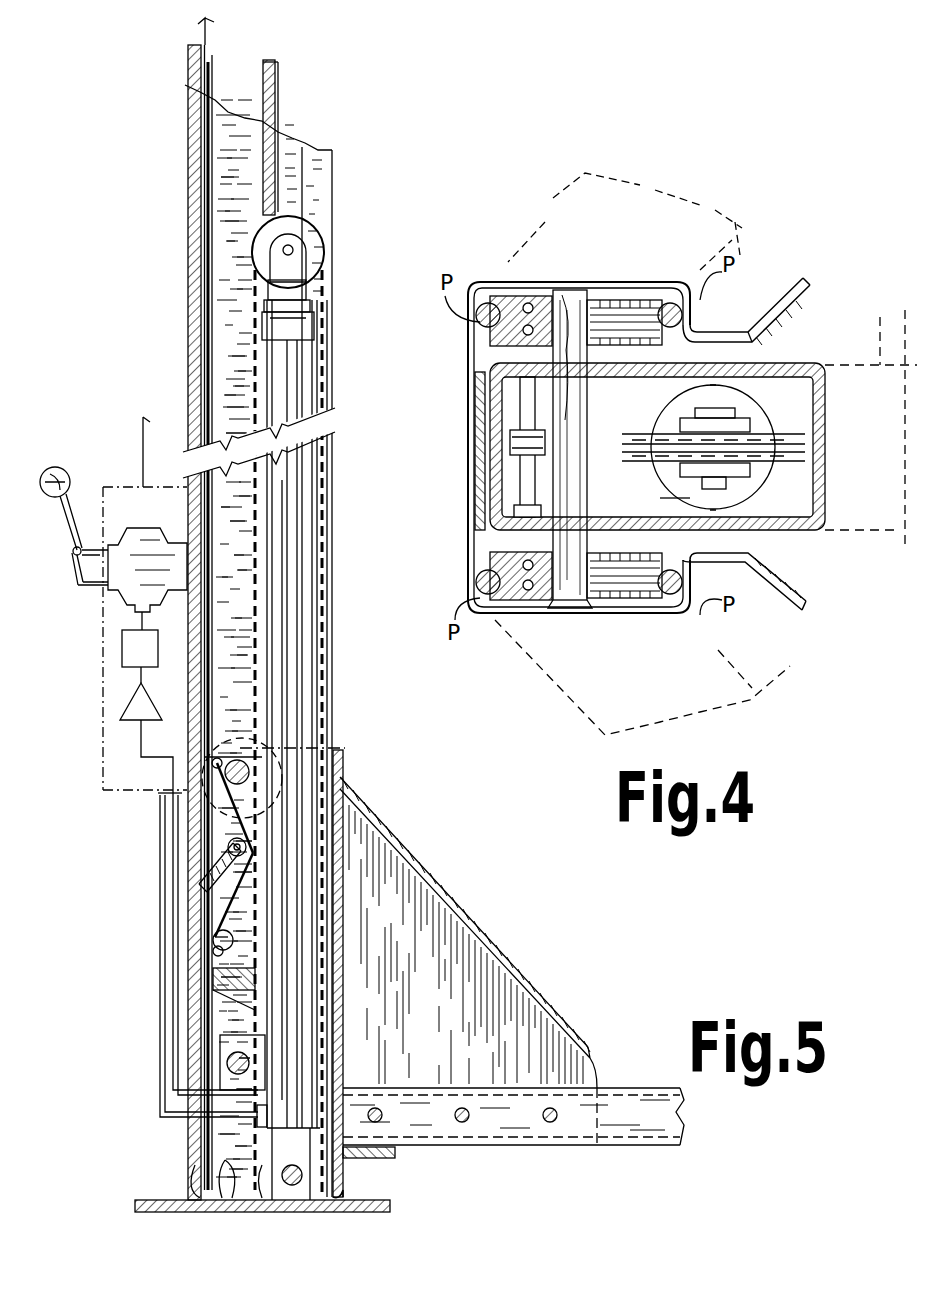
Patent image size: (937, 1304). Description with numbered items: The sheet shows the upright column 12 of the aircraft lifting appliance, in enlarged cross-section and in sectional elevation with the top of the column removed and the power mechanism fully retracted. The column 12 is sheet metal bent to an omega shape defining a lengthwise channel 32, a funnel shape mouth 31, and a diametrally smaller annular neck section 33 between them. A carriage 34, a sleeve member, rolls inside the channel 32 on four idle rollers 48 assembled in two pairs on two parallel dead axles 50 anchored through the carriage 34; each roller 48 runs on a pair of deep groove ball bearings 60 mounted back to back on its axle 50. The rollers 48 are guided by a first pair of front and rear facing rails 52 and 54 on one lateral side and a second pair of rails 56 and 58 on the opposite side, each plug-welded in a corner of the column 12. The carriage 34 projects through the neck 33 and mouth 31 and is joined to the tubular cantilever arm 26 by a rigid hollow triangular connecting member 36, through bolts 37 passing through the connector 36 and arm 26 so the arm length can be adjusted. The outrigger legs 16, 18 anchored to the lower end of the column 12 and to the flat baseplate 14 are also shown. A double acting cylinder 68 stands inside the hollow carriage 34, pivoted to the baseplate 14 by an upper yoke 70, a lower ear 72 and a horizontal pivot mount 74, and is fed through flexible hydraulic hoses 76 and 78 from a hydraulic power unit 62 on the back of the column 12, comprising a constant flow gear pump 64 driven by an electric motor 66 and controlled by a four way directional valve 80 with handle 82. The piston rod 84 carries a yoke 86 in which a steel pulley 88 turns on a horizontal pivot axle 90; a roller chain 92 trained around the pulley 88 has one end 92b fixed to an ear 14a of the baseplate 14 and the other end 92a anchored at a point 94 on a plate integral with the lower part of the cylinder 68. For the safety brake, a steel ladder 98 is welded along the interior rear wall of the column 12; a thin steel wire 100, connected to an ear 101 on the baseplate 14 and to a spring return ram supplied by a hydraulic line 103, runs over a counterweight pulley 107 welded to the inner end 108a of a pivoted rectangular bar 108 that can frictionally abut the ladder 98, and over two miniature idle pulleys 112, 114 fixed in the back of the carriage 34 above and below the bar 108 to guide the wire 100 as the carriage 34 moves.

In FIG. 4, the upright column 12 is at (760, 322).
In FIG. 5, the baseplate 14 is at (150, 1200).
In FIG. 5, the ear 14a is at (330, 1210).
In FIG. 4, the ground support outrigger leg 16 is at (553, 198).
In FIG. 4, the ground support outrigger leg 18 is at (790, 666).
In FIG. 5, the tubular arm 26 is at (625, 1098).
In FIG. 4, the funnel shape mouth 31 is at (800, 595).
In FIG. 4, the lengthwise channel 32 is at (480, 350).
In FIG. 4, the annular section 33 is at (765, 333).
In FIG. 5, the carriage 34 is at (336, 750).
In FIG. 4, the carriage 34 is at (820, 532).
In FIG. 5, the connecting member 36 is at (418, 1050).
In FIG. 4, the connecting member 36 is at (878, 335).
In FIG. 5, the through bolts 37 is at (548, 1118).
In FIG. 4, the idle rollers 48 is at (512, 300).
In FIG. 5, the dead axles 50 is at (228, 1060).
In FIG. 4, the dead axles 50 is at (570, 300).
In FIG. 5, the upright facing rail 52 is at (190, 62).
In FIG. 4, the upright facing rail 52 is at (486, 302).
In FIG. 4, the upright facing rail 54 is at (668, 302).
In FIG. 4, the upright facing rail 56 is at (485, 585).
In FIG. 4, the upright facing rail 58 is at (690, 615).
In FIG. 4, the bearing assembly 60 is at (530, 300).
In FIG. 5, the hydraulic power unit 62 is at (93, 710).
In FIG. 5, the constant flow gear pump 64 is at (122, 648).
In FIG. 5, the electric motor 66 is at (140, 700).
In FIG. 4, the double acting cylinder 68 is at (655, 500).
In FIG. 5, the upper yoke 70 is at (228, 1185).
In FIG. 5, the lower ear 72 is at (298, 1185).
In FIG. 5, the horizontal pivot mount 74 is at (270, 1180).
In FIG. 5, the flexible hydraulic hose 76 is at (205, 995).
In FIG. 5, the flexible hydraulic hose 78 is at (170, 1078).
In FIG. 5, the four way directional valve 80 is at (118, 528).
In FIG. 5, the handle 82 is at (55, 467).
In FIG. 5, the piston rod 84 is at (316, 332).
In FIG. 5, the yoke 86 is at (306, 288).
In FIG. 4, the yoke 86 is at (660, 410).
In FIG. 5, the steel pulley 88 is at (300, 224).
In FIG. 4, the steel pulley 88 is at (772, 432).
In FIG. 5, the horizontal pivot axle 90 is at (303, 246).
In FIG. 5, the power transmission roller chain 92 is at (252, 290).
In FIG. 4, the power transmission roller chain 92 is at (778, 460).
In FIG. 5, the chain end 92a is at (212, 1022).
In FIG. 5, the chain end 92b is at (355, 1175).
In FIG. 5, the anchor point 94 is at (230, 977).
In FIG. 4, the steel ladder 98 is at (476, 410).
In FIG. 5, the thin steel wire 100 is at (212, 30).
In FIG. 4, the thin steel wire 100 is at (492, 518).
In FIG. 5, the ear 101 is at (192, 1195).
In FIG. 5, the hydraulic line 103 is at (140, 420).
In FIG. 5, the counterweight pulley 107 is at (228, 848).
In FIG. 5, the elongated rectangular bar 108 is at (240, 858).
In FIG. 5, the inner end of bar 108a is at (212, 880).
In FIG. 5, the miniature idle pulley 112 is at (202, 835).
In FIG. 5, the miniature idle pulley 114 is at (218, 950).